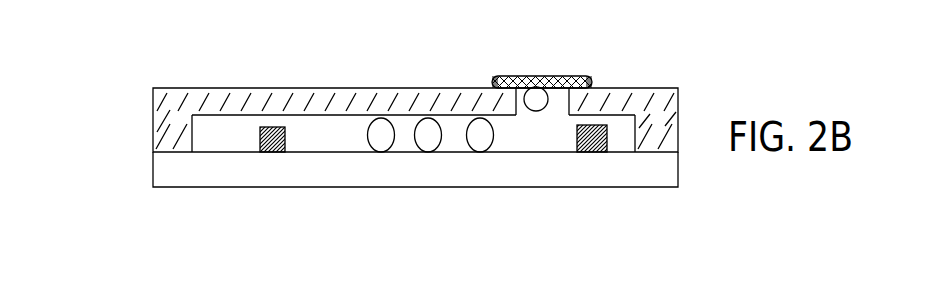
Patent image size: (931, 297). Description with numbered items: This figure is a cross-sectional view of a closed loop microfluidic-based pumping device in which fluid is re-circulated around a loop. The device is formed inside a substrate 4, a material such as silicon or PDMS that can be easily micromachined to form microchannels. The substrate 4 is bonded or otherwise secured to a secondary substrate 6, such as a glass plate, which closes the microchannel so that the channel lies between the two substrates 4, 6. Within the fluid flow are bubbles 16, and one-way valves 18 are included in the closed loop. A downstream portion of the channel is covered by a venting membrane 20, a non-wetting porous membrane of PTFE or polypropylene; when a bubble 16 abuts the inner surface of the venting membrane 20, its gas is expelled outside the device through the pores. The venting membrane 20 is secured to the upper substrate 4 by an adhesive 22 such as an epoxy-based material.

The substrate 4 is at (254, 88).
The secondary substrate 6 is at (663, 170).
The bubbles 16 is at (384, 142).
The one-way valves 18 is at (283, 146).
The venting membrane 20 is at (557, 43).
The adhesive 22 is at (587, 80).